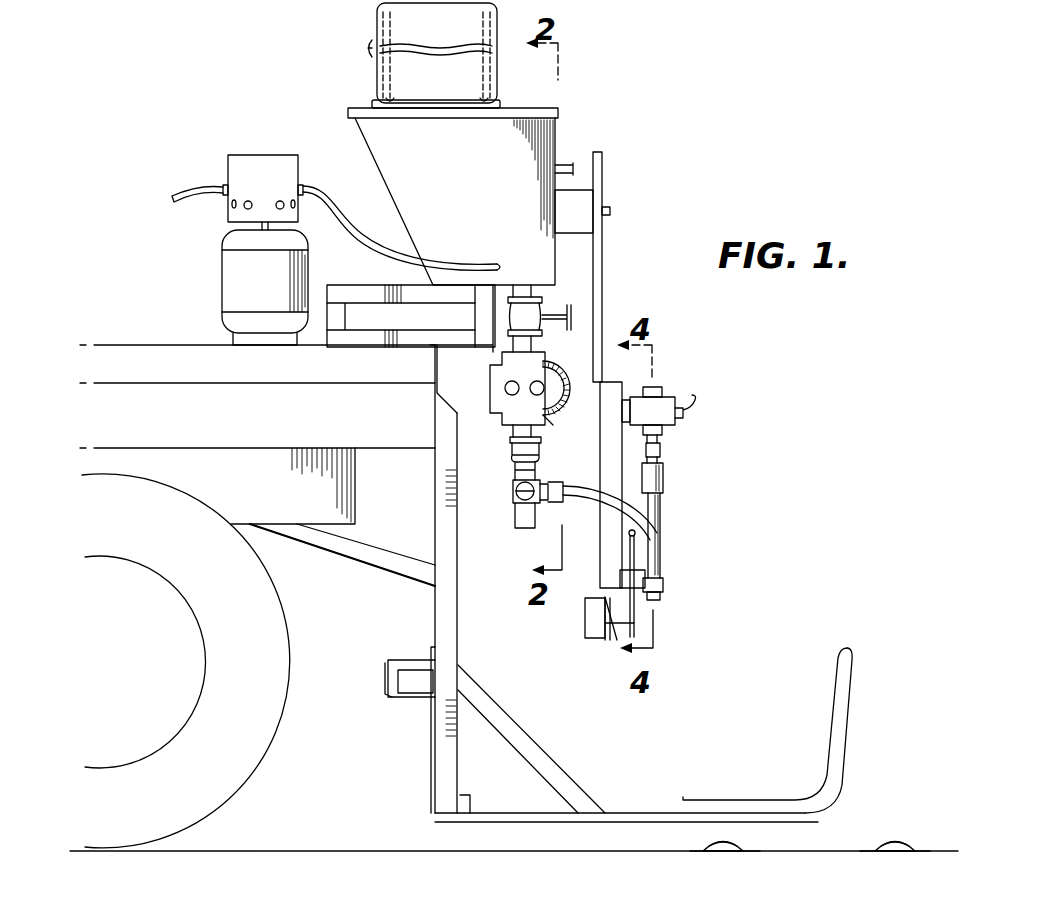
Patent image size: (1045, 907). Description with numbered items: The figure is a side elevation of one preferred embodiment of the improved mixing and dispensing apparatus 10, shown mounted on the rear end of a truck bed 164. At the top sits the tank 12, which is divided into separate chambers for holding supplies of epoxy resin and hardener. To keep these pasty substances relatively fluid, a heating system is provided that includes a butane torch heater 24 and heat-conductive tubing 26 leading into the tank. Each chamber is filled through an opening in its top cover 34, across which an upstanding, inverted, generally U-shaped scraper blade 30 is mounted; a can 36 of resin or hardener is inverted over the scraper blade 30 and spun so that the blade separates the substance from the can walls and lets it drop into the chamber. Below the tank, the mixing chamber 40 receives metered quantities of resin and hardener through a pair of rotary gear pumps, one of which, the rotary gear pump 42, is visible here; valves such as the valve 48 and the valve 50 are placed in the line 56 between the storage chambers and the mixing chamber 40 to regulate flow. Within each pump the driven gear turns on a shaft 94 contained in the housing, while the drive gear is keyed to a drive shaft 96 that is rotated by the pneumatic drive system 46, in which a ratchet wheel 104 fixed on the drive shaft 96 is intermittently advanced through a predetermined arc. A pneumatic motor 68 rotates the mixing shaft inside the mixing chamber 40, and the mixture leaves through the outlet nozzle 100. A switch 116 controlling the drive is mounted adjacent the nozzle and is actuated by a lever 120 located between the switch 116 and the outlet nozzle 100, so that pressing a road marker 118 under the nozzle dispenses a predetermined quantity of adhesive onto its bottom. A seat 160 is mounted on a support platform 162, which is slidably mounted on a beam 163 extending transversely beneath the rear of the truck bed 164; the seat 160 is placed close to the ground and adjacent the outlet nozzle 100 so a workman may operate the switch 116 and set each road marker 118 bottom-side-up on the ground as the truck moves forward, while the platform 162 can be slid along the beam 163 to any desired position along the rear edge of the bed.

The mixing and dispensing apparatus 10 is at (652, 176).
The tank 12 is at (562, 129).
The butane torch heater 24 is at (258, 150).
The heat-conductive tubing 26 is at (336, 200).
The scraper blade 30 is at (478, 72).
The top cover 34 is at (356, 111).
The can 36 is at (497, 42).
The mixing chamber 40 is at (668, 506).
The rotary gear pump 42 is at (552, 372).
The pneumatic drive system 46 is at (735, 847).
The valve 48 is at (540, 313).
The valve 50 is at (515, 493).
The line 56 is at (566, 483).
The pneumatic motor 68 is at (663, 406).
The shaft 94 is at (505, 388).
The drive shaft 96 is at (540, 393).
The outlet nozzle 100 is at (668, 592).
The ratchet wheel 104 is at (578, 387).
The switch 116 is at (585, 625).
The road marker 118 is at (713, 856).
The lever 120 is at (637, 626).
The seat 160 is at (810, 764).
The support platform 162 is at (618, 812).
The beam 163 is at (395, 698).
The truck bed 164 is at (375, 436).